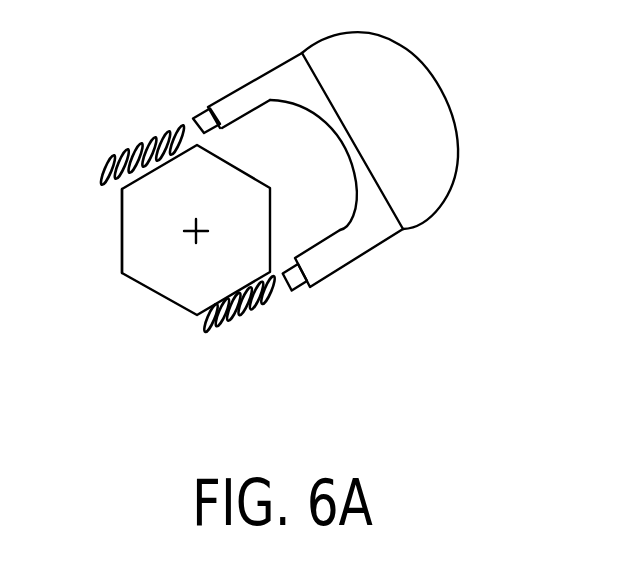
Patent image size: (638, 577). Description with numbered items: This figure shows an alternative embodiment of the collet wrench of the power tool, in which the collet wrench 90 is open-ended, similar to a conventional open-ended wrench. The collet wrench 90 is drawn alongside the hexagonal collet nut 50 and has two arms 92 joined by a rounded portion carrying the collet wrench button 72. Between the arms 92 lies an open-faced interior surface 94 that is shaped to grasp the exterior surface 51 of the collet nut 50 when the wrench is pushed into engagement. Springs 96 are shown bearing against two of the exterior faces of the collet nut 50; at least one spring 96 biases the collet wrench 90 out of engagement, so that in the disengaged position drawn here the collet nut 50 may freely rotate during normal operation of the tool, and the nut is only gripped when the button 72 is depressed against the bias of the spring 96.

The collet nut 50 is at (160, 278).
The exterior face of collet nut 51 is at (120, 218).
The collet wrench button 72 is at (430, 73).
The collet wrench 90 is at (378, 238).
The arms 92 is at (228, 102).
The open-faced interior surface 94 is at (340, 143).
The spring 96 is at (153, 137).